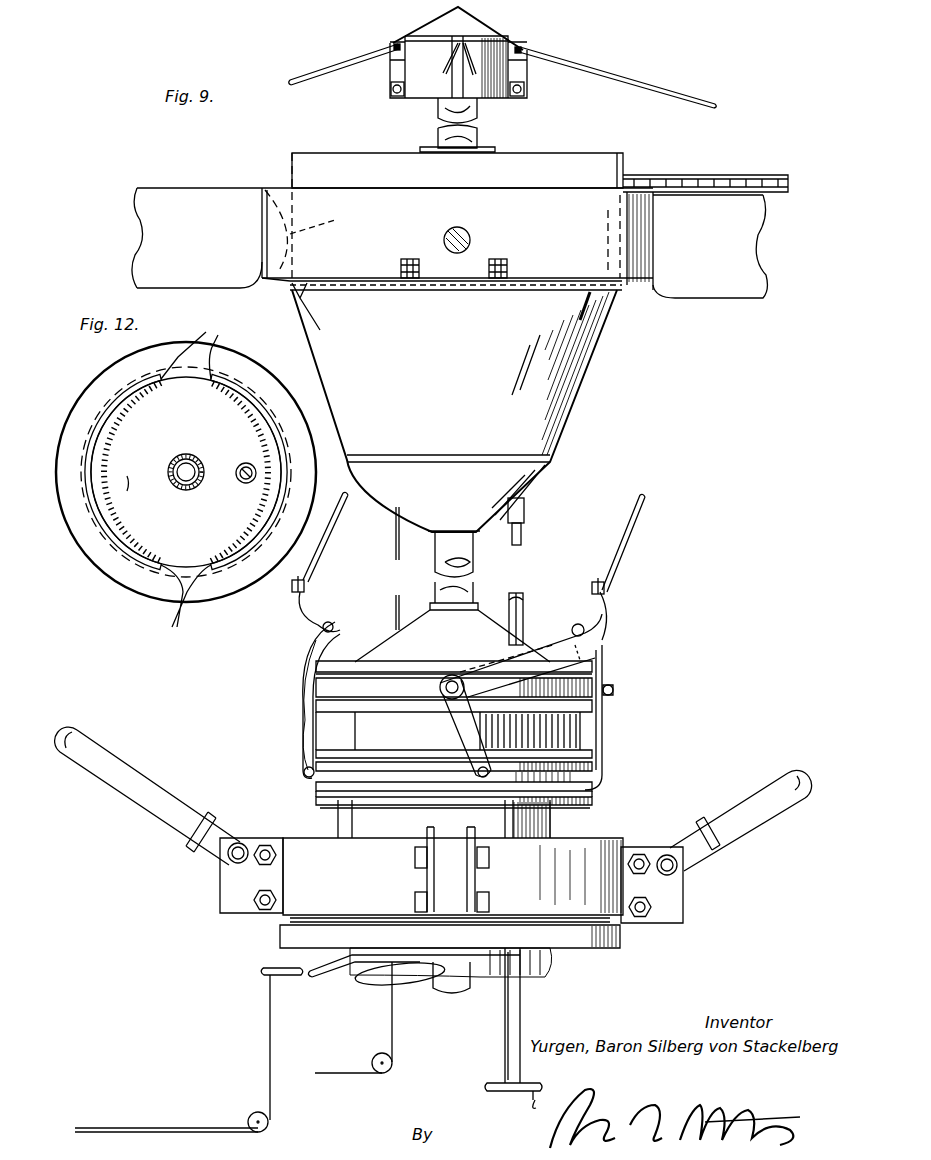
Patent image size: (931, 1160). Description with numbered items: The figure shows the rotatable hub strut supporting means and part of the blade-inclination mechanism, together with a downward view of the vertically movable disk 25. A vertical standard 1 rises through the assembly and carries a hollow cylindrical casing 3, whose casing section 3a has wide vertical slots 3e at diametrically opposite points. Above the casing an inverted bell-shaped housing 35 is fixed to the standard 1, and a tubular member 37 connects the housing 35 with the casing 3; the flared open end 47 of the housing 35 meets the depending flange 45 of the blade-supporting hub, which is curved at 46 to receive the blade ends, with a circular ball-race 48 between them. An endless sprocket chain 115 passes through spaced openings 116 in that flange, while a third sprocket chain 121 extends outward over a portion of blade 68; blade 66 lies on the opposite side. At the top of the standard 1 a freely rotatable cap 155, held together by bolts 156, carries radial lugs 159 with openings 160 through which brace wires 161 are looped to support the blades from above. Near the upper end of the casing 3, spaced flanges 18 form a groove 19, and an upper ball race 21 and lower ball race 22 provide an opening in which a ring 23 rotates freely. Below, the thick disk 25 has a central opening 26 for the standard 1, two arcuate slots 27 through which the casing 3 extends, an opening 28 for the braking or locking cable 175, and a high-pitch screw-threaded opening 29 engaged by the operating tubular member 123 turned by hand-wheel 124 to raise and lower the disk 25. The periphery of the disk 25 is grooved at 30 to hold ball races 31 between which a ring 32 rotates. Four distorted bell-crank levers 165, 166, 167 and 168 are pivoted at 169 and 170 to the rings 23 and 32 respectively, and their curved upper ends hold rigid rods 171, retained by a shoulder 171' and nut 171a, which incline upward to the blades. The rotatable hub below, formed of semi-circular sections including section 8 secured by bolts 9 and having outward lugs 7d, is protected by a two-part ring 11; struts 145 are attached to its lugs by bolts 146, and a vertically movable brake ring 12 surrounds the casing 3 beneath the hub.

In FIG. 9, the freely rotatable cap 155 is at (488, 40).
In FIG. 9, the openings 160 is at (394, 46).
In FIG. 9, the brace wires 161 is at (320, 72).
In FIG. 9, the ribs or lugs 159 is at (396, 68).
In FIG. 9, the bolts 156 is at (392, 97).
In FIG. 9, the depending flange 45 is at (545, 212).
In FIG. 9, the curved portions 46 is at (612, 260).
In FIG. 9, the blade 66 is at (155, 226).
In FIG. 9, the blade 68 is at (740, 279).
In FIG. 9, the third endless sprocket chain 121 is at (728, 176).
In FIG. 9, the endless sprocket chain 115 is at (410, 257).
In FIG. 9, the spaced openings 116 is at (402, 259).
In FIG. 9, the circular ball-race 48 is at (298, 296).
In FIG. 9, the flared open end 47 is at (612, 320).
In FIG. 9, the inverted bell-shaped housing 35 is at (565, 380).
In FIG. 9, the vertical standard 1 is at (445, 557).
In FIG. 12, the vertical standard 1 is at (176, 487).
In FIG. 9, the casing section 3a is at (553, 832).
In FIG. 12, the casing section 3a is at (280, 500).
In FIG. 9, the two-part ring 11 is at (340, 838).
In FIG. 9, the ring 23 is at (385, 672).
In FIG. 9, the tubular member 37 is at (520, 617).
In FIG. 9, the nut 171a is at (585, 587).
In FIG. 9, the rigid rods 171 is at (504, 542).
In FIG. 9, the shoulder 171' is at (499, 589).
In FIG. 9, the bell-crank lever 168 is at (332, 623).
In FIG. 9, the bell-crank lever 165 is at (305, 647).
In FIG. 9, the bell-crank lever 166 is at (600, 630).
In FIG. 9, the bell-crank lever 167 is at (605, 674).
In FIG. 9, the pivotal connection 169 is at (452, 674).
In FIG. 9, the pivotal connection 170 is at (305, 772).
In FIG. 9, the upper ball race 21 is at (352, 663).
In FIG. 9, the circumferential groove 19 is at (340, 692).
In FIG. 9, the circumferential flanges 18 is at (340, 707).
In FIG. 9, the lower ball race 22 is at (352, 722).
In FIG. 9, the ball races 31 is at (400, 770).
In FIG. 9, the ring 32 is at (370, 764).
In FIG. 9, the vertically movable disk 25 is at (595, 760).
In FIG. 12, the vertically movable disk 25 is at (132, 590).
In FIG. 9, the circumferential groove 30 is at (316, 792).
In FIG. 9, the semi-circular hub section 8 is at (300, 900).
In FIG. 9, the bolts 9 is at (268, 845).
In FIG. 9, the bolt 146 is at (241, 843).
In FIG. 9, the struts 145 is at (110, 770).
In FIG. 9, the lugs 7d is at (428, 880).
In FIG. 9, the brake shoe or ring 12 is at (622, 948).
In FIG. 9, the operating tubular member 123 is at (522, 1014).
In FIG. 9, the hand-wheel 124 is at (495, 1082).
In FIG. 12, the vertical slots 3e is at (193, 486).
In FIG. 12, the arcuate slots 27 is at (100, 414).
In FIG. 12, the hollow cylindrical casing 3 is at (105, 522).
In FIG. 12, the central opening 26 is at (188, 456).
In FIG. 12, the interiorly screw-threaded opening 29 is at (247, 463).
In FIG. 12, the opening 28 is at (124, 472).
In FIG. 12, the operating cable 175 is at (128, 492).